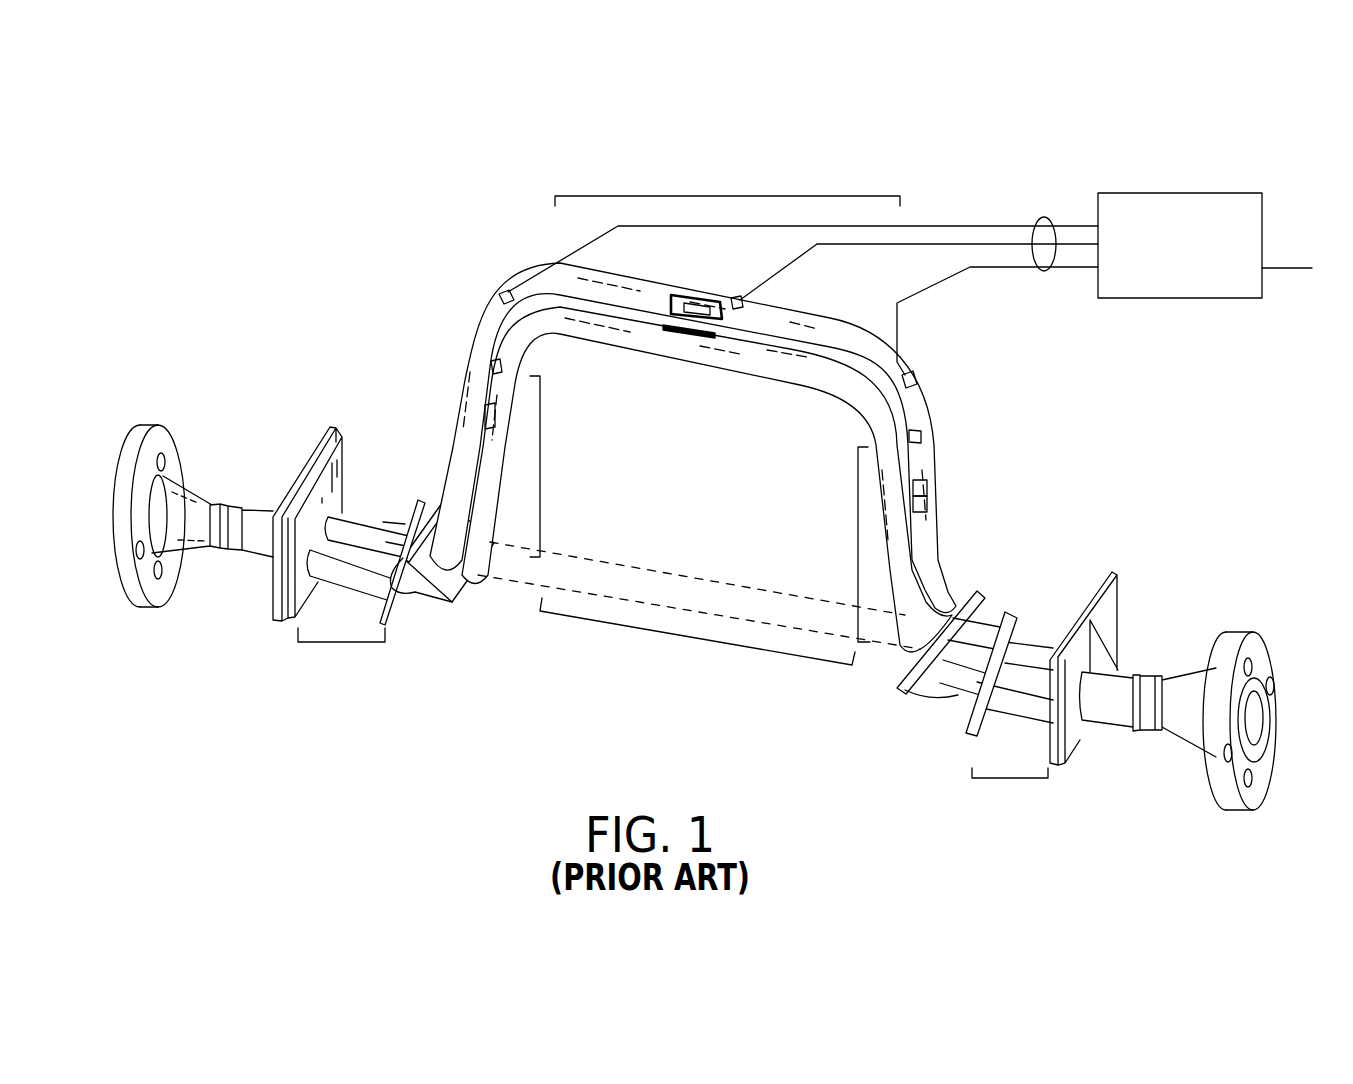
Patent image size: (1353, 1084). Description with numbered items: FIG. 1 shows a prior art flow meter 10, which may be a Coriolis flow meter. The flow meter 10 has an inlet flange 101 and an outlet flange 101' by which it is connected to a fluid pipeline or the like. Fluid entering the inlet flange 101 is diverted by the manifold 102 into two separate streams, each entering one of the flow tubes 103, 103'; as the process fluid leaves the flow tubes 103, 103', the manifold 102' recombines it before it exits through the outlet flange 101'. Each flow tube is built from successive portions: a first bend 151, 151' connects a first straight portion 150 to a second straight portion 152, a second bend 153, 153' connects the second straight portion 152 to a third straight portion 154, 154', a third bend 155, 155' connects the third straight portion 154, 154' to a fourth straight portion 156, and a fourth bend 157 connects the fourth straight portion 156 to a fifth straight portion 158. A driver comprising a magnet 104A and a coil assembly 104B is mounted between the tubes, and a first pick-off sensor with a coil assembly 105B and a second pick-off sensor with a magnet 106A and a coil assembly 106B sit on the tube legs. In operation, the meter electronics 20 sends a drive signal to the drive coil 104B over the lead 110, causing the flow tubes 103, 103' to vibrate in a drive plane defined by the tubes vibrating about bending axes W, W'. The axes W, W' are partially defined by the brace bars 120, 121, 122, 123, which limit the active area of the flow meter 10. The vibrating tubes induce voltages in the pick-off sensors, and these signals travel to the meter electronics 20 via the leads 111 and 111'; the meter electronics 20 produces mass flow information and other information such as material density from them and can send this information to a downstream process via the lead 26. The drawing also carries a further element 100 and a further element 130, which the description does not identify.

The flow meter 10 is at (308, 318).
The meter electronics 20 is at (1172, 300).
The lead 26 is at (1300, 262).
The leads 100 is at (1047, 273).
The inlet flange 101 is at (193, 487).
The outlet flange 101' is at (1185, 686).
The manifold 102 is at (307, 504).
The manifold 102' is at (1099, 634).
The flow tube 103 is at (707, 479).
The flow tube 103' is at (693, 438).
The magnet 104A is at (677, 330).
The coil assembly 104B is at (683, 293).
The coil assembly 105B is at (485, 412).
The magnet 106A is at (927, 518).
The coil assembly 106B is at (927, 488).
The lead 110 is at (780, 267).
The lead 111 is at (943, 183).
The lead 111' is at (954, 319).
The brace bar 120 is at (415, 496).
The brace bar 121 is at (965, 736).
The brace bar 122 is at (462, 598).
The brace bar 123 is at (897, 689).
The brace bars 130 is at (503, 296).
The first straight portion 150 is at (353, 643).
The first bend 151 is at (432, 612).
The first bend 151' is at (518, 494).
The second straight portion 152 is at (546, 470).
The second bend 153 is at (425, 297).
The second bend 153' is at (509, 222).
The third straight portion 154 is at (697, 661).
The third straight portion 154' is at (727, 157).
The third bend 155 is at (821, 440).
The third bend 155' is at (966, 356).
The fourth straight portion 156 is at (857, 530).
The fourth bend 157 is at (912, 716).
The fifth straight portion 158 is at (1010, 780).
The bending axis W is at (697, 572).
The bending axis W' is at (699, 589).